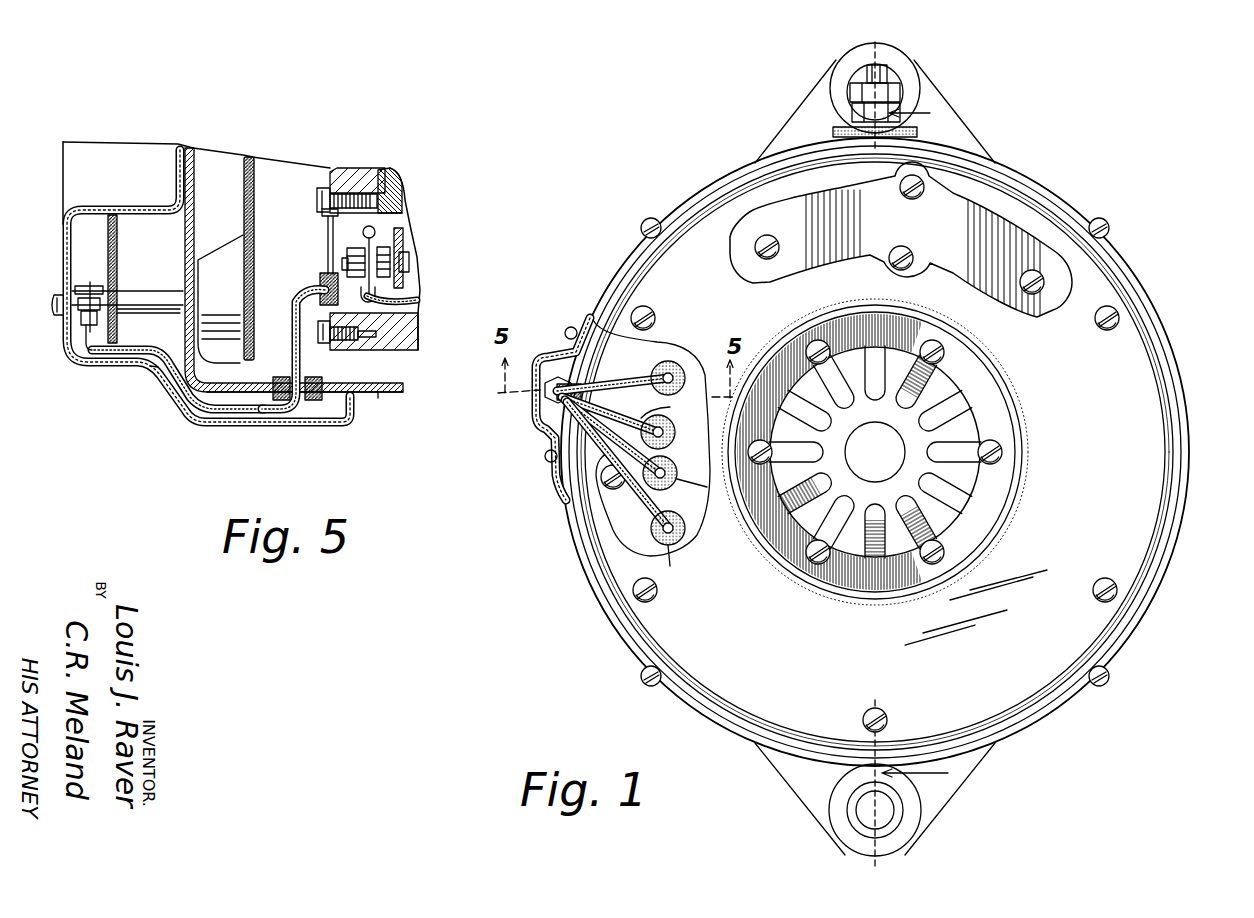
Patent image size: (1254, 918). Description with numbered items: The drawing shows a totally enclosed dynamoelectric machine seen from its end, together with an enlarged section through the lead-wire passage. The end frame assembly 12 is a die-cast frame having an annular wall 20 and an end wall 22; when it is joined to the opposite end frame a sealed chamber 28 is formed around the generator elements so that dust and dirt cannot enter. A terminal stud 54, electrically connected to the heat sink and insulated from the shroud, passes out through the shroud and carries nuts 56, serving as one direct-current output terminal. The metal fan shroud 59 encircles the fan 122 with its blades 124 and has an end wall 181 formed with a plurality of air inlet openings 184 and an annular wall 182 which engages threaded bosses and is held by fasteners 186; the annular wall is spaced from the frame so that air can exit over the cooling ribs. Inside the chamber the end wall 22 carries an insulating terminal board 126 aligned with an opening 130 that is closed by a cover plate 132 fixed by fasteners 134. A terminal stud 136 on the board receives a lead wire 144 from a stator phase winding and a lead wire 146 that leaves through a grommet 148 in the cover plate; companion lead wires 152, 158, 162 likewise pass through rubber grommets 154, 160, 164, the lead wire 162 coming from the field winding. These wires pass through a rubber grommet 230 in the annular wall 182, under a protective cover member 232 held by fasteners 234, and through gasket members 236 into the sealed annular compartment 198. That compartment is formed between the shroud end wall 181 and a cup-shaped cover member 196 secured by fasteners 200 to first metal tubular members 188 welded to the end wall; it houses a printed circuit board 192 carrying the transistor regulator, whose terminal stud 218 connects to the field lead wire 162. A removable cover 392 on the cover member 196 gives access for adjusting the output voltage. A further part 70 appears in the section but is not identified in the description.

In FIG. 5, the end frame assembly 12 is at (411, 358).
In FIG. 5, the annular wall 20 is at (405, 336).
In FIG. 5, the end wall 22 is at (346, 167).
In FIG. 5, the sealed chamber 28 is at (398, 221).
In FIG. 1, the terminal stud 54 is at (866, 73).
In FIG. 1, the nuts 56 is at (853, 112).
In FIG. 1, the fan shroud 59 is at (628, 262).
In FIG. 5, the fan shroud 59 is at (378, 394).
In FIG. 5, the insulator 70 is at (396, 186).
In FIG. 5, the fan 122 is at (248, 156).
In FIG. 5, the blades 124 is at (222, 254).
In FIG. 5, the terminal board 126 is at (403, 242).
In FIG. 5, the opening 130 is at (350, 218).
In FIG. 5, the cover plate 132 is at (327, 233).
In FIG. 1, the fasteners 134 is at (603, 478).
In FIG. 5, the fasteners 134 is at (321, 188).
In FIG. 5, the terminal stud 136 is at (409, 264).
In FIG. 5, the lead wire 144 is at (418, 300).
In FIG. 1, the lead wire 146 is at (650, 343).
In FIG. 5, the lead wire 146 is at (292, 304).
In FIG. 1, the grommet 148 is at (678, 366).
In FIG. 5, the grommet 148 is at (321, 280).
In FIG. 1, the lead wire 152 is at (677, 462).
In FIG. 1, the rubber grommet 154 is at (709, 490).
In FIG. 1, the lead wire 158 is at (674, 565).
In FIG. 1, the rubber grommet 160 is at (684, 535).
In FIG. 1, the lead wire 162 is at (673, 406).
In FIG. 1, the rubber grommet 164 is at (676, 429).
In FIG. 1, the end wall 181 is at (953, 404).
In FIG. 5, the end wall 181 is at (189, 146).
In FIG. 1, the annular wall 182 is at (1047, 720).
In FIG. 5, the annular wall 182 is at (398, 392).
In FIG. 1, the air inlet openings 184 is at (897, 433).
In FIG. 1, the fasteners 186 is at (652, 218).
In FIG. 5, the first metal tubular members 188 is at (80, 290).
In FIG. 5, the printed circuit board 192 is at (106, 236).
In FIG. 1, the cover member 196 is at (1142, 347).
In FIG. 5, the cover member 196 is at (86, 207).
In FIG. 5, the sealed annular compartment 198 is at (143, 222).
In FIG. 1, the fasteners 200 is at (916, 198).
In FIG. 5, the fasteners 200 is at (56, 317).
In FIG. 5, the terminal stud 218 is at (84, 330).
In FIG. 1, the rubber grommet 230 is at (551, 420).
In FIG. 5, the rubber grommet 230 is at (314, 401).
In FIG. 1, the cover member 232 is at (590, 336).
In FIG. 5, the cover member 232 is at (250, 424).
In FIG. 1, the fasteners 234 is at (571, 327).
In FIG. 5, the gasket members 236 is at (162, 380).
In FIG. 1, the cover 392 is at (1000, 220).